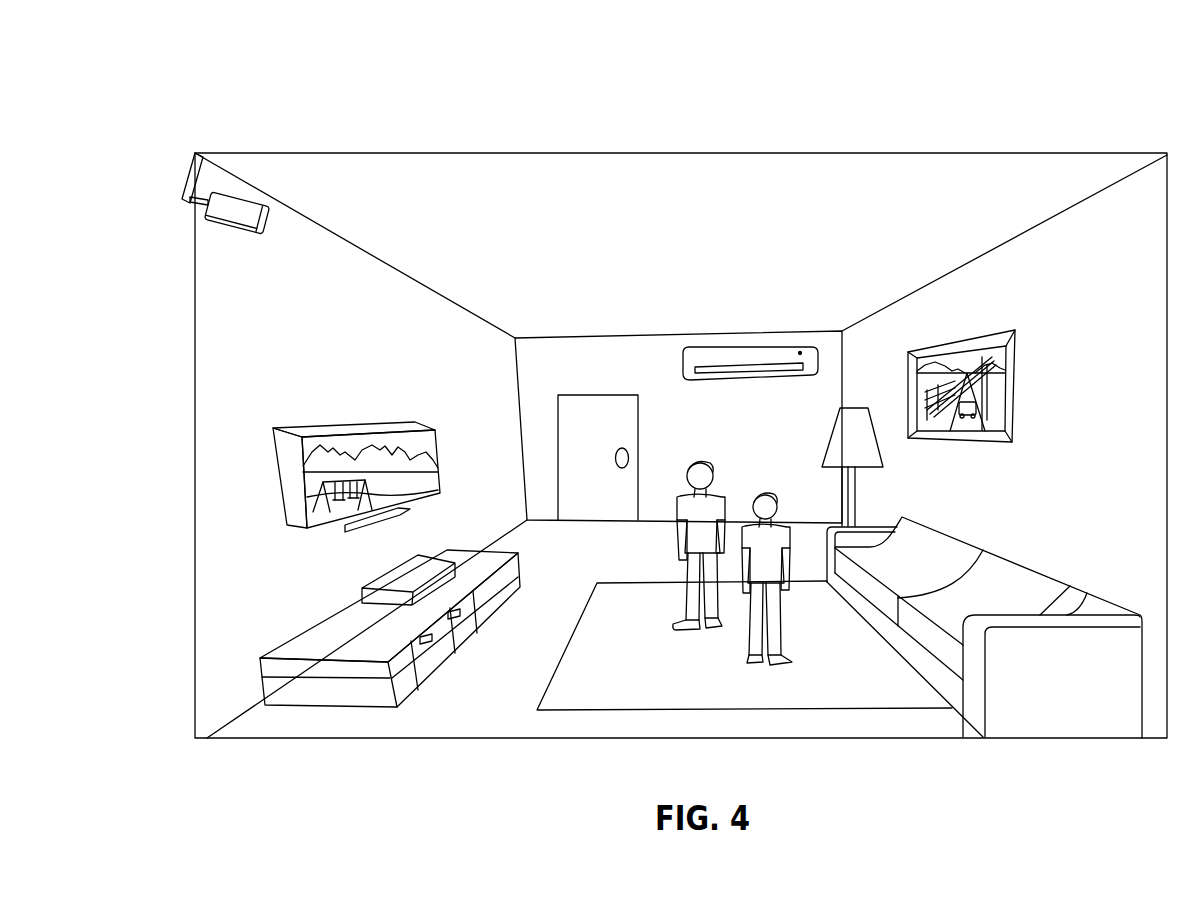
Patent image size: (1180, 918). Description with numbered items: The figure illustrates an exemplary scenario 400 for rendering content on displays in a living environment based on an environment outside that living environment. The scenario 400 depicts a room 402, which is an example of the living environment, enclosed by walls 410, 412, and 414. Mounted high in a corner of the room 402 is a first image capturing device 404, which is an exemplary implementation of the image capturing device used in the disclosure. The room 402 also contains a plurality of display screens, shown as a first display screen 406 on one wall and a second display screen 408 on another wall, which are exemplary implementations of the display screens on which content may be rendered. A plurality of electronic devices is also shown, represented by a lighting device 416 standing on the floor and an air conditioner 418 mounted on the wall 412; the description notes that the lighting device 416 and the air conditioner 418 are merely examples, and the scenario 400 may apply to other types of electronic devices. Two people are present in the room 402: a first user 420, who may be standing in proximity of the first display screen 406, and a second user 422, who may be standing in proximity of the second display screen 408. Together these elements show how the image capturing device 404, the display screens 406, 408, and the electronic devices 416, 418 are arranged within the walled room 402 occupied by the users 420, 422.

The exemplary scenario 400 is at (96, 78).
The room 402 is at (825, 154).
The first image capturing device 404 is at (227, 230).
The first display screen 406 is at (323, 428).
The second display screen 408 is at (1013, 403).
The wall 410 is at (448, 323).
The wall 412 is at (598, 342).
The wall 414 is at (950, 293).
The lighting device 416 is at (836, 426).
The air conditioner 418 is at (732, 348).
The first user 420 is at (683, 531).
The second user 422 is at (788, 551).